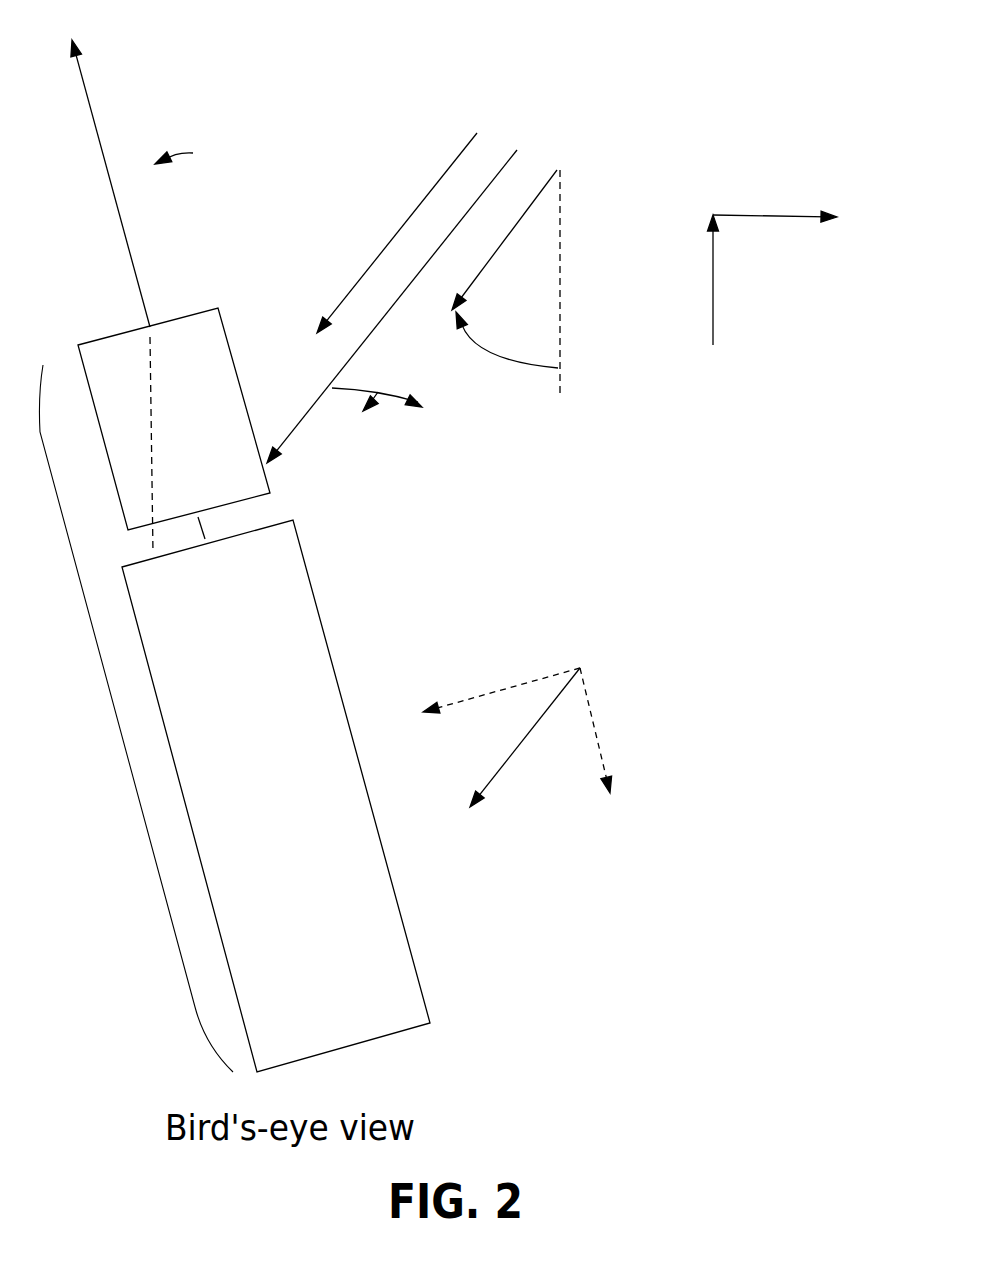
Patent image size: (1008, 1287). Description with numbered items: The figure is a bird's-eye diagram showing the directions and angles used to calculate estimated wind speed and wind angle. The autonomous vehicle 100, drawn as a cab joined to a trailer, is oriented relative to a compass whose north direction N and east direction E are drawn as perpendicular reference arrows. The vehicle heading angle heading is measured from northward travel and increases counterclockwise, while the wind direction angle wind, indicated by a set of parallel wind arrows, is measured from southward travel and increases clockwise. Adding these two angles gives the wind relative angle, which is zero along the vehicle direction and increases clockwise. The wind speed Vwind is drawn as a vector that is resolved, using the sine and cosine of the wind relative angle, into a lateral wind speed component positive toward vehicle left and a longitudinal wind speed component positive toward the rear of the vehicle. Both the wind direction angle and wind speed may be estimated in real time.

The autonomous vehicle 100 is at (118, 713).
The north direction N is at (712, 298).
The east direction E is at (797, 219).
The vehicle heading angle heading is at (139, 183).
The wind direction angle wind is at (403, 298).
The wind speed Vwind is at (519, 751).